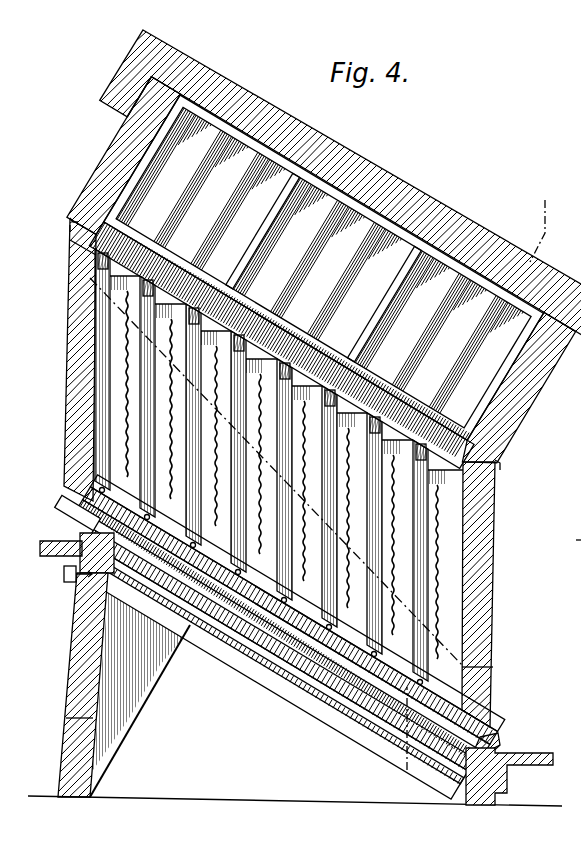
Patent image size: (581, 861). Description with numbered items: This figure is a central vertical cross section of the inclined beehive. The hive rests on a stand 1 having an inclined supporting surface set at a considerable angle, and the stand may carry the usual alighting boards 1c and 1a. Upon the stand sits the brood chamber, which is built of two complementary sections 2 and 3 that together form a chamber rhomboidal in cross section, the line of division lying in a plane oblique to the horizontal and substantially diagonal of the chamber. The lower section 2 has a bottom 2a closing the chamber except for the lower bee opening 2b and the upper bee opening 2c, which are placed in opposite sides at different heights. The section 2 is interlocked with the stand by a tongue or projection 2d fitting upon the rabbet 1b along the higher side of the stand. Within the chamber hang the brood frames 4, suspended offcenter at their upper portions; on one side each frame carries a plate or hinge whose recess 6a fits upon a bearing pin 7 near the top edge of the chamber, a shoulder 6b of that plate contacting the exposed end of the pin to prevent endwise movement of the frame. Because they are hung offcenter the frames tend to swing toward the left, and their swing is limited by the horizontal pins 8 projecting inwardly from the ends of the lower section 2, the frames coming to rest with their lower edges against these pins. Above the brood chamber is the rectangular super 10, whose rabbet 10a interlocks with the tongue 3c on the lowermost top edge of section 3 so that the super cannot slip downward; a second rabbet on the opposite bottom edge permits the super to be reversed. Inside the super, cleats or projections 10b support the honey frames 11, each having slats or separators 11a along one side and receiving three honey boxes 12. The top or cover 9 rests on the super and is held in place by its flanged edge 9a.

The stand 1 is at (70, 670).
The alighting board 1a is at (38, 547).
The rabbet 1b is at (64, 570).
The alighting board 1c is at (550, 742).
The lower section of brood chamber 2 is at (63, 413).
The bottom 2a is at (240, 613).
The lower bee opening 2b is at (498, 737).
The upper bee opening 2c is at (92, 505).
The tongue or projection 2d is at (78, 515).
The upper section of brood chamber 3 is at (496, 503).
The tongue 3c is at (506, 470).
The brood frame 4 is at (157, 365).
The recess 6a is at (580, 534).
The shoulder 6b is at (95, 263).
The bearing pin 7 is at (64, 250).
The horizontal pin 8 is at (72, 472).
The top or cover 9 is at (295, 118).
The flanged edge 9a is at (107, 72).
The super 10 is at (103, 157).
The rabbet 10a is at (80, 213).
The cleat or projection 10b is at (70, 230).
The honey frame 11 is at (227, 127).
The slat or separator 11a is at (210, 170).
The honey box 12 is at (437, 233).